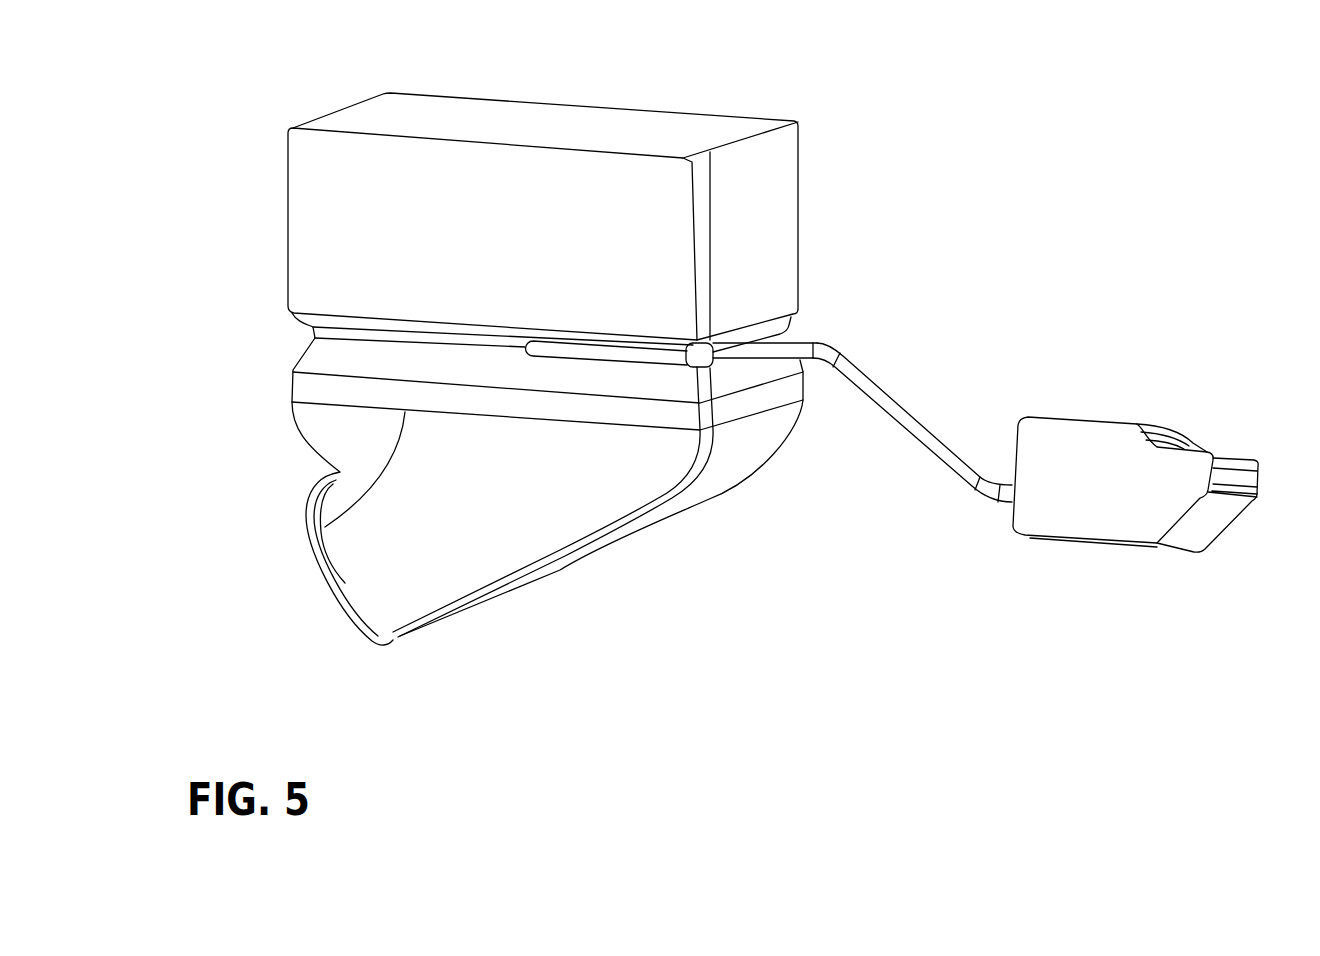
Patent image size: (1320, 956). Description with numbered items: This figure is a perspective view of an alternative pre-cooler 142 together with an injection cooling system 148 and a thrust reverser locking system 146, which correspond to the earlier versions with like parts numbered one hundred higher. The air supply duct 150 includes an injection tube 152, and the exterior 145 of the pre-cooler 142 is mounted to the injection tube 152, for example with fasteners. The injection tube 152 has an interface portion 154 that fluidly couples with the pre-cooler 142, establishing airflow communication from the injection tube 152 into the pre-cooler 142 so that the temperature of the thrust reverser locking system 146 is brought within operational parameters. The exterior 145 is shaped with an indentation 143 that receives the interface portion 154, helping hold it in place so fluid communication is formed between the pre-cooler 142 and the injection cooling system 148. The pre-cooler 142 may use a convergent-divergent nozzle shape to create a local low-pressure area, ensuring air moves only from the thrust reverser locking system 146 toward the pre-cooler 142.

The pre-cooler 142 is at (288, 207).
The indentation 143 is at (343, 339).
The exterior 145 is at (289, 283).
The thrust reverser locking system 146 is at (1100, 418).
The injection cooling system 148 is at (970, 188).
The air supply duct 150 is at (861, 396).
The injection tube 152 is at (913, 412).
The interface portion 154 is at (632, 363).